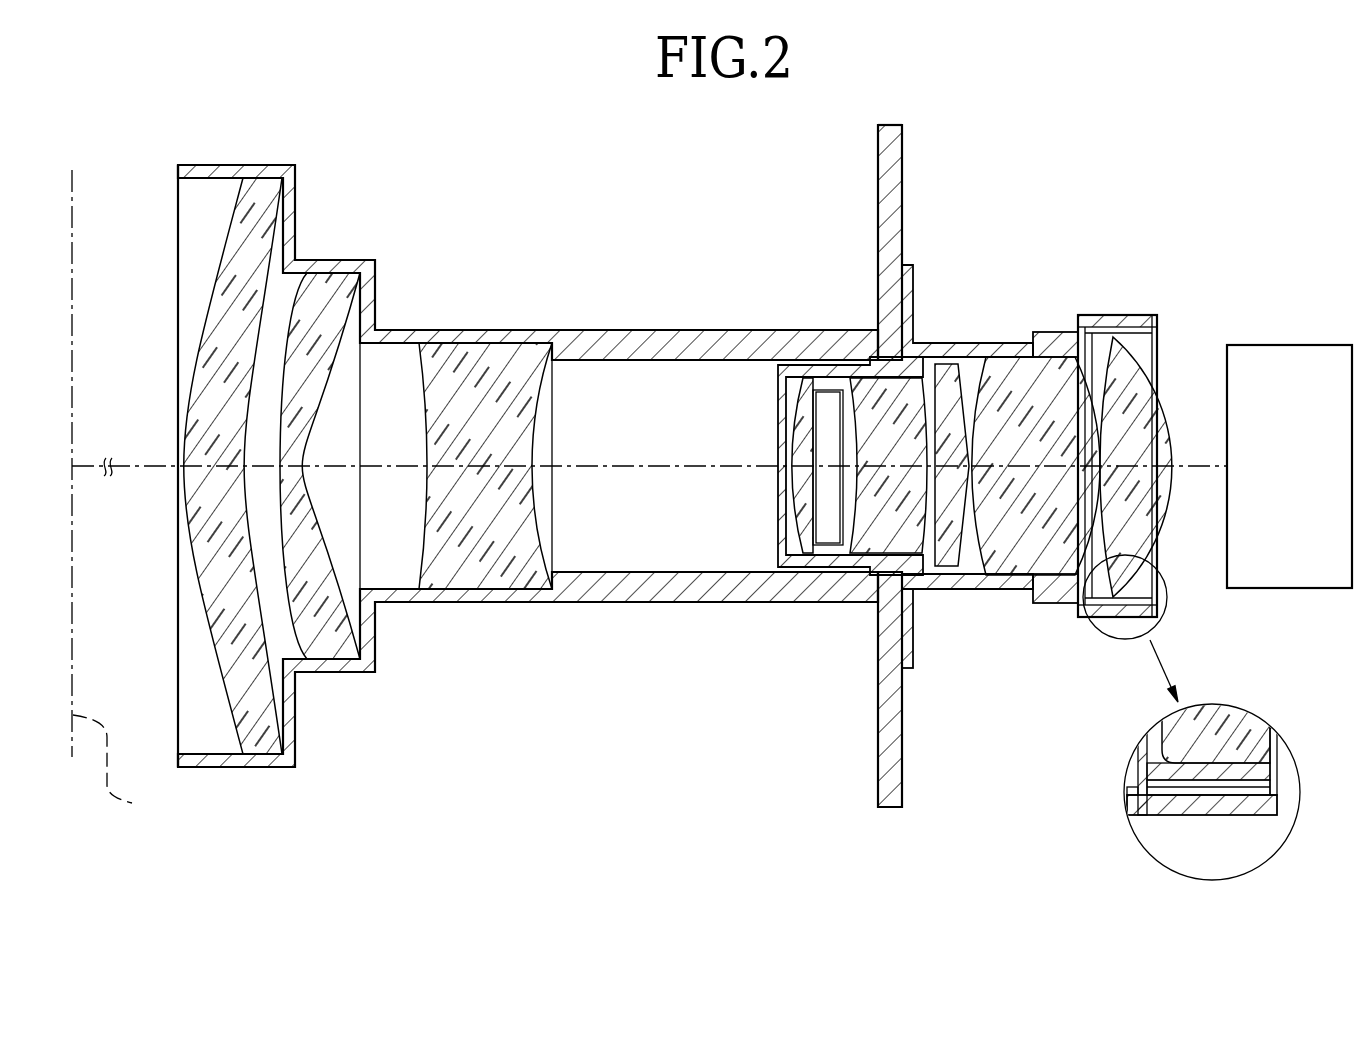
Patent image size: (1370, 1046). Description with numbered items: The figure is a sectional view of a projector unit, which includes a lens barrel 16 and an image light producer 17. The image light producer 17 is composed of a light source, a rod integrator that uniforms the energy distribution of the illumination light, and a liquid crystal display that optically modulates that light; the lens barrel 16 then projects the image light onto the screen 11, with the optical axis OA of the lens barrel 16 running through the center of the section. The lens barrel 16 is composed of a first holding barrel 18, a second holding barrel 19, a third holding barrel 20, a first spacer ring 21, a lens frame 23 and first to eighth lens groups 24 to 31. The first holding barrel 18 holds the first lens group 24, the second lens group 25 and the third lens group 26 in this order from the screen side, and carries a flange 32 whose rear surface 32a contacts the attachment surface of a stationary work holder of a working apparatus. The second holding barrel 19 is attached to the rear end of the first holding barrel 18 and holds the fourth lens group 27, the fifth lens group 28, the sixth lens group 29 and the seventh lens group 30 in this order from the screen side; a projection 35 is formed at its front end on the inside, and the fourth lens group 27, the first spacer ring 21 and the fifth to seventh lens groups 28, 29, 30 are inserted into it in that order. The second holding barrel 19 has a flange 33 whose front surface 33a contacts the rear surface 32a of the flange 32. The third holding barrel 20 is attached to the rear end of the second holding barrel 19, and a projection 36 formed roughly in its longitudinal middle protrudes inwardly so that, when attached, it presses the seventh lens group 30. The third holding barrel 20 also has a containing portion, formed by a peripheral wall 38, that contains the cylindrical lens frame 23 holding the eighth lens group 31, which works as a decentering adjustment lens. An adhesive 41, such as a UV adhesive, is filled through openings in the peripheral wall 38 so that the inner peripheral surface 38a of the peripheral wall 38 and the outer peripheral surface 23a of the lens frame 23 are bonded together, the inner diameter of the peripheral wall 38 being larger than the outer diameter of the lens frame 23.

The screen 11 is at (120, 495).
The lens barrel 16 is at (570, 250).
The image light producer 17 is at (1287, 333).
The first holding barrel 18 is at (707, 330).
The second holding barrel 19 is at (957, 338).
The third holding barrel 20 is at (1100, 327).
The first spacer ring 21 is at (822, 545).
The lens frame 23 is at (1163, 333).
The outer peripheral surface 23a is at (1130, 807).
The first lens group 24 is at (247, 223).
The second lens group 25 is at (343, 282).
The third lens group 26 is at (478, 570).
The fourth lens group 27 is at (795, 492).
The fifth lens group 28 is at (860, 550).
The sixth lens group 29 is at (947, 580).
The seventh lens group 30 is at (1010, 560).
The eighth lens group 31 is at (1138, 535).
The flange 32 is at (878, 178).
The rear surface 32a is at (905, 160).
The flange 33 is at (923, 338).
The front surface 33a is at (897, 662).
The projection 35 is at (778, 385).
The projection 36 is at (1077, 327).
The peripheral wall 38 is at (1247, 807).
The inner peripheral surface 38a is at (1277, 787).
The adhesive 41 is at (1117, 327).
The optical axis OA is at (647, 466).